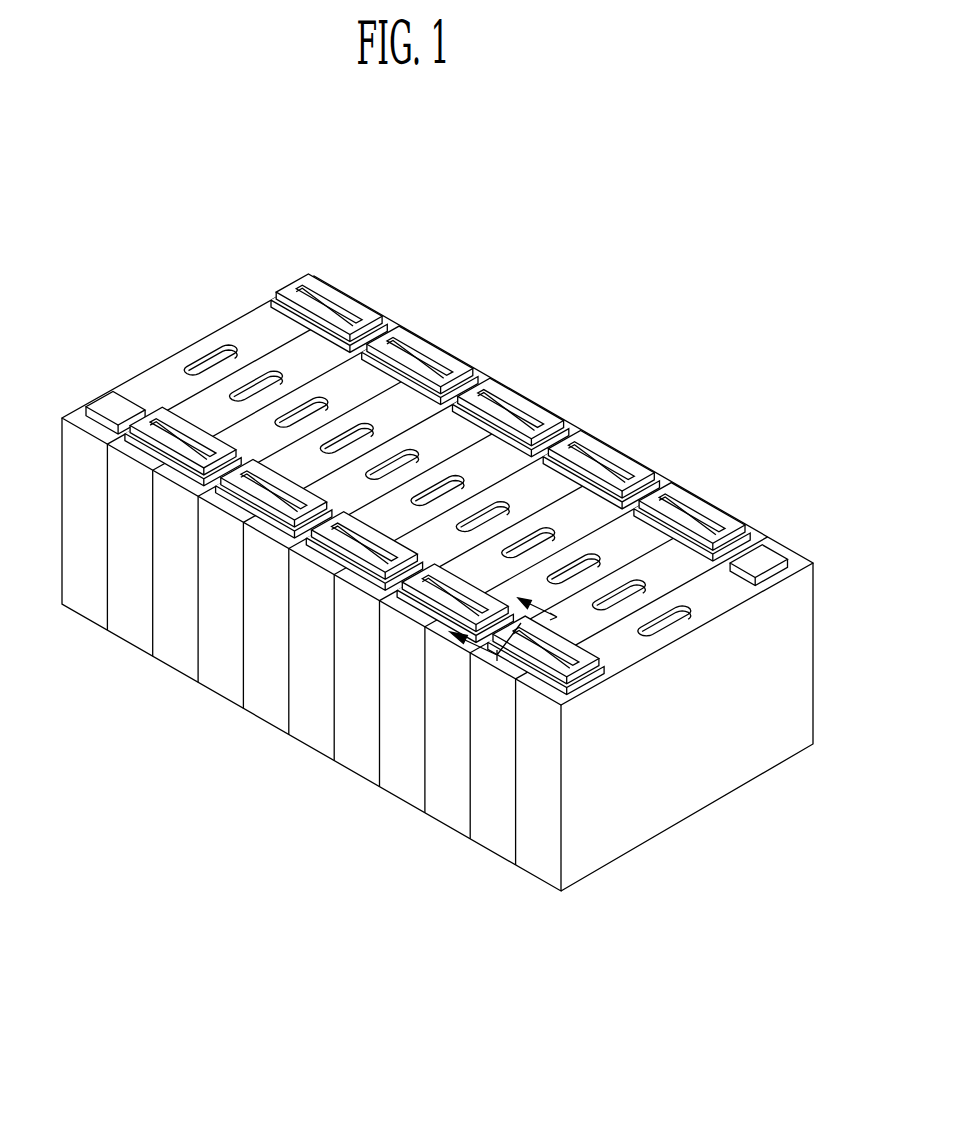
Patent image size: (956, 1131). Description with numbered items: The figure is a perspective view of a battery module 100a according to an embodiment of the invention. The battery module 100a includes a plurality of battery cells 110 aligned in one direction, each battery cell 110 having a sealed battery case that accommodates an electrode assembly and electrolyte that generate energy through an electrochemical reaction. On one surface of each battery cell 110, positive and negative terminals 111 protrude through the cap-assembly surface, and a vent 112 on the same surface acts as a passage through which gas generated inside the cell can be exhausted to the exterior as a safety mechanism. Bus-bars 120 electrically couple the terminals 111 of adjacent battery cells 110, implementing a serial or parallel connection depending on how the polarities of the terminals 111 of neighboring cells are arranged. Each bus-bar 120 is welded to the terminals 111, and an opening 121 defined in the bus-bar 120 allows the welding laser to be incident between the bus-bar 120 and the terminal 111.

The battery module 100a is at (758, 257).
The battery cell 110 is at (538, 861).
The terminal 111 is at (752, 538).
The vent 112 is at (667, 623).
The bus-bar 120 is at (718, 497).
The opening 121 is at (679, 505).